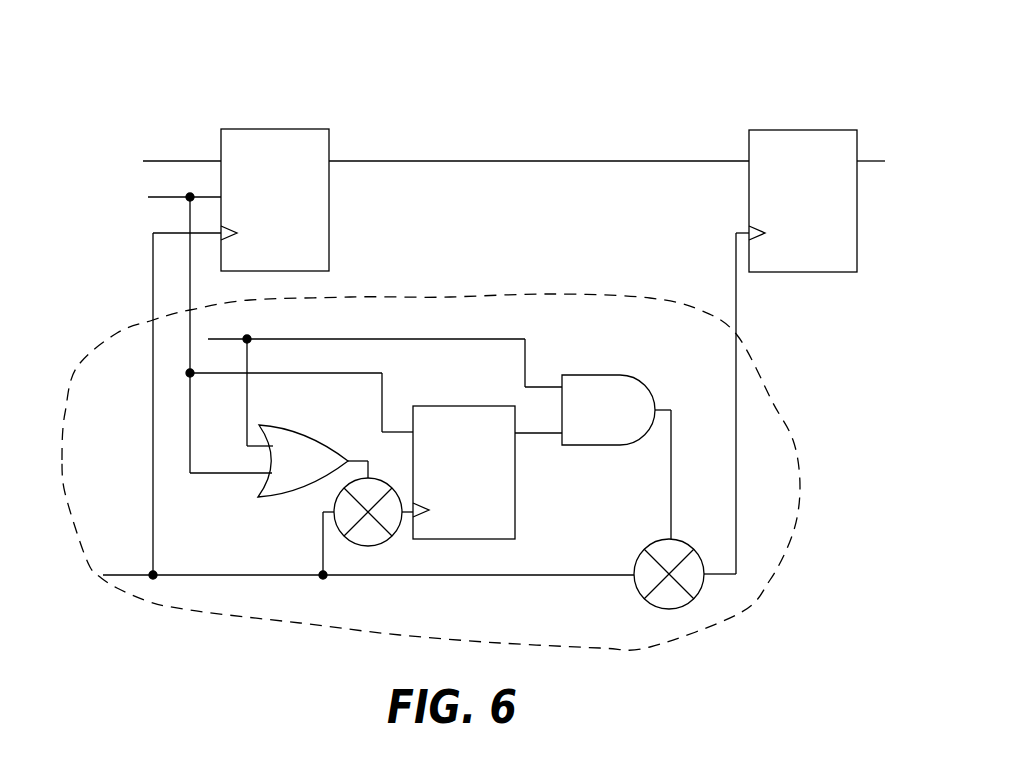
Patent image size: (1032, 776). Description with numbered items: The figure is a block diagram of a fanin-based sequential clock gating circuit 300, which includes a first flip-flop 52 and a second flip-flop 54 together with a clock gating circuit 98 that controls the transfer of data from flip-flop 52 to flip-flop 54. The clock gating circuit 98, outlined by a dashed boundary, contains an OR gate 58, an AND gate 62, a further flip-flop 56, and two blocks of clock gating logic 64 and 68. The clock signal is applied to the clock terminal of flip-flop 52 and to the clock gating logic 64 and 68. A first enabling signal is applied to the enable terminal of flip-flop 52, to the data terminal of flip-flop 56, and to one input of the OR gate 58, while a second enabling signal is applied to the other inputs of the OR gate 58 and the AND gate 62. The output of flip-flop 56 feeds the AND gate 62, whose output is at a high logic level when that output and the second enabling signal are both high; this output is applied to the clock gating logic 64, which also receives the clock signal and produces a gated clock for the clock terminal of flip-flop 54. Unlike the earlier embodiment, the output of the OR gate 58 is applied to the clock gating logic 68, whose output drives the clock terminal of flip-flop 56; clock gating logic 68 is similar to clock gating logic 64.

The fanin-based sequential clock gating circuit 300 is at (532, 114).
The flip-flop 52 is at (329, 129).
The flip-flop 54 is at (749, 130).
The flip-flop 56 is at (472, 528).
The OR gate 58 is at (259, 490).
The AND gate 62 is at (600, 375).
The clock gating logic 64 is at (637, 585).
The clock gating logic 68 is at (350, 546).
The clock gating circuit 98 is at (793, 438).